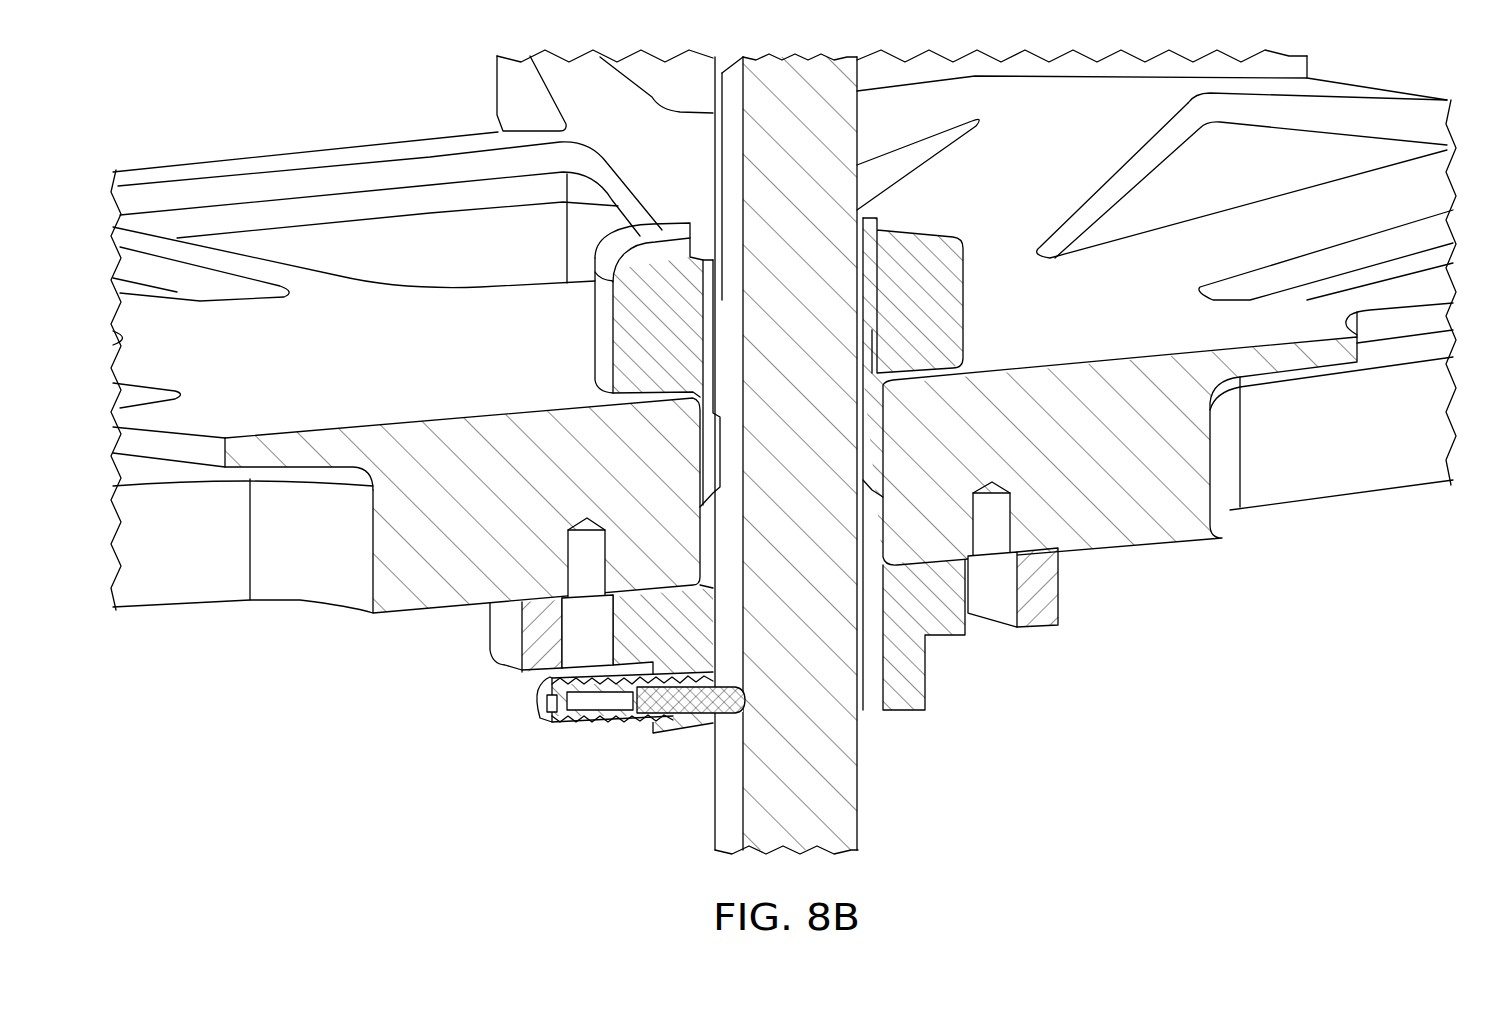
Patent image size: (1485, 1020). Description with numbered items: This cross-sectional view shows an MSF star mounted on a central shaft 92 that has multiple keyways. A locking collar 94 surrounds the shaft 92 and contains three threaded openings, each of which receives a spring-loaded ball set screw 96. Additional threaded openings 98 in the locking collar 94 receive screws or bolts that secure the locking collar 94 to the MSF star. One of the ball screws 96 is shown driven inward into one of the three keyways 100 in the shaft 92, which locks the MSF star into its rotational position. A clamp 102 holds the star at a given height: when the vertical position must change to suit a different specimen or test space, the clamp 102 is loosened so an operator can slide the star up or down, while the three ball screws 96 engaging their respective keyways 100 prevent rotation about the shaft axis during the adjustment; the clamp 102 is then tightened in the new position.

The central shaft 92 is at (858, 787).
The locking collar 94 is at (512, 657).
The spring-loaded ball set screw 96 is at (542, 712).
The threaded opening 98 is at (590, 657).
The keyway 100 is at (727, 780).
The clamp 102 is at (960, 300).